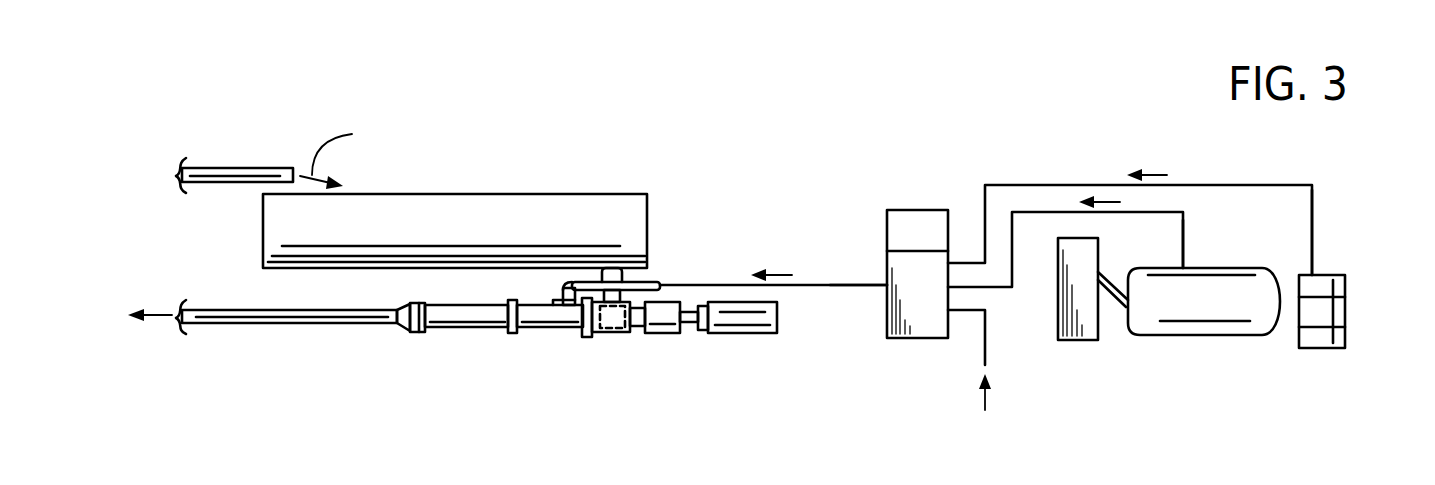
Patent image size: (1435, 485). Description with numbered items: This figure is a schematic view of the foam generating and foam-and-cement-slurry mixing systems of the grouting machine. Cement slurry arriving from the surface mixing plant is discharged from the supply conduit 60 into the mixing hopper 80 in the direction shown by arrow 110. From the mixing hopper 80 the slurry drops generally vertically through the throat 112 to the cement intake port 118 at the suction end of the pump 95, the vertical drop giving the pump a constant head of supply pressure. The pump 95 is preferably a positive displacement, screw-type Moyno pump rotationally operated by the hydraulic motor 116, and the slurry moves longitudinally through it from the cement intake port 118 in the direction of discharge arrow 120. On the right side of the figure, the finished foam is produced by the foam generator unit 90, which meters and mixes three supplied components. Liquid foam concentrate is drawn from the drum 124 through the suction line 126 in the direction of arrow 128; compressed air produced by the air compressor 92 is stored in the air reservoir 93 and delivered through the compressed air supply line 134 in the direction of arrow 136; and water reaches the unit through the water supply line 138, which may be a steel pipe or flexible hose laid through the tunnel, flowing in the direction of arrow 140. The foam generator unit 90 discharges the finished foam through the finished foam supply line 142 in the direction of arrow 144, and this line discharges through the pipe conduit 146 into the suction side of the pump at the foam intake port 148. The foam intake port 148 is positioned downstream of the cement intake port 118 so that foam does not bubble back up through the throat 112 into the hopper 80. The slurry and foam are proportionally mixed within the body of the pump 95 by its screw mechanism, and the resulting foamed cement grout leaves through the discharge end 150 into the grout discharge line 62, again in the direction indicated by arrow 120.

The supply conduit 60 is at (223, 170).
The arrow 110 is at (347, 151).
The mixing hopper 80 is at (487, 202).
The grout discharge line 62 is at (280, 324).
The discharge arrow 120 is at (170, 317).
The discharge end 150 is at (405, 334).
The pump 95 is at (481, 336).
The pipe conduit 146 is at (557, 304).
The foam intake port 148 is at (553, 309).
The throat 112 is at (624, 275).
The cement intake port 118 is at (600, 337).
The hydraulic motor 116 is at (735, 335).
The arrow 144 is at (786, 275).
The finished foam supply line 142 is at (840, 288).
The foam generator unit 90 is at (905, 340).
The arrow 128 is at (1167, 175).
The suction line 126 is at (1312, 233).
The arrow 136 is at (1120, 202).
The compressed air supply line 134 is at (1183, 248).
The water supply line 138 is at (990, 345).
The arrow 140 is at (979, 400).
The air compressor 92 is at (1098, 341).
The air reservoir 93 is at (1235, 336).
The drum 124 is at (1330, 349).